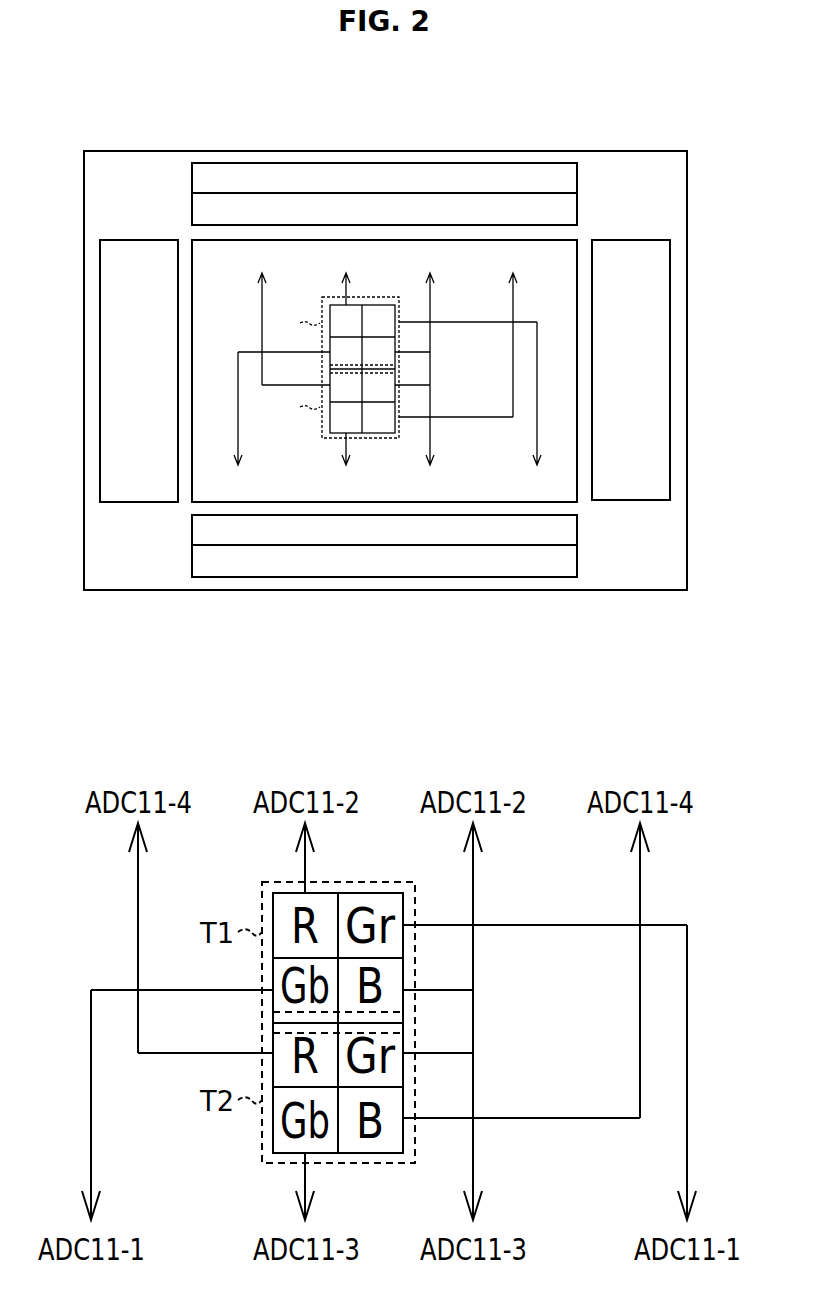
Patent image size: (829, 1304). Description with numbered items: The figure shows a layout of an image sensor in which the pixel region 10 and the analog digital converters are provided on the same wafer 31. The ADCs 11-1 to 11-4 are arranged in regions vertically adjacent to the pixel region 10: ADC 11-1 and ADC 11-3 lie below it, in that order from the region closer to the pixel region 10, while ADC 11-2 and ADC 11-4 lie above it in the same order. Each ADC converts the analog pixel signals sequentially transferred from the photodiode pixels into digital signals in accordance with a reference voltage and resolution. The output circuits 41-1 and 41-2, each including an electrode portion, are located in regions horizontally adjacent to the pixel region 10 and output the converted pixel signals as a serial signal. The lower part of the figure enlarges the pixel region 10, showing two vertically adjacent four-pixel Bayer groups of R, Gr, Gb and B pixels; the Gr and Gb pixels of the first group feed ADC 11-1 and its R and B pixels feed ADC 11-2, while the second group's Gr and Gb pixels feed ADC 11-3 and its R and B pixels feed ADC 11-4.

The pixel region 10 is at (578, 460).
The ADC 11-1 is at (445, 527).
The ADC 11-2 is at (518, 212).
The ADC 11-3 is at (517, 555).
The ADC 11-4 is at (445, 183).
The wafer 31 is at (162, 592).
The output circuit 41-1 is at (137, 238).
The output circuit 41-2 is at (635, 238).